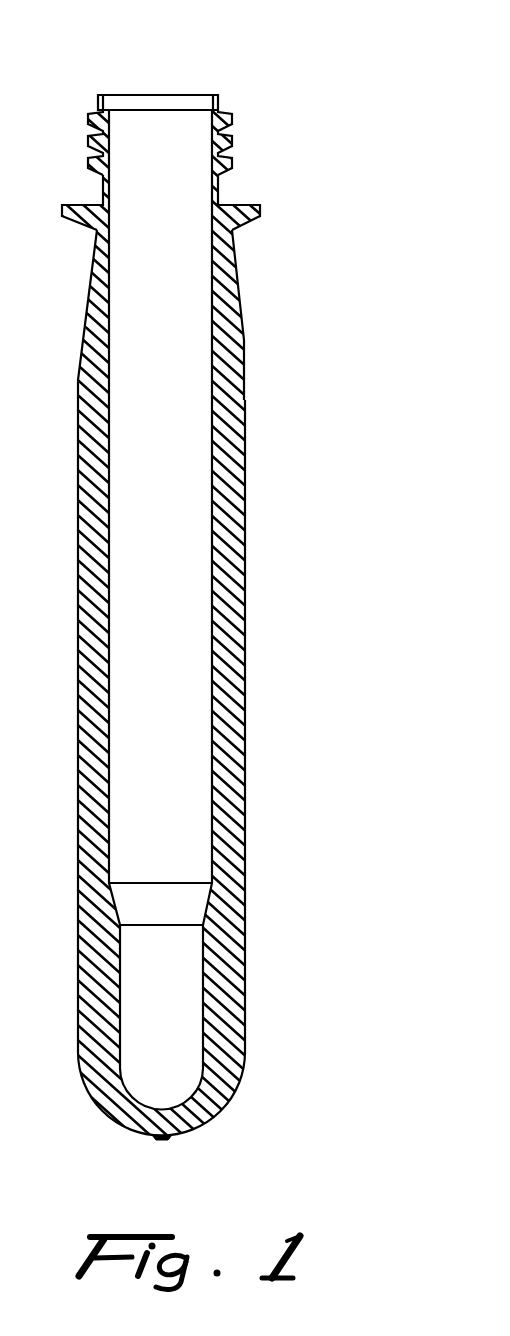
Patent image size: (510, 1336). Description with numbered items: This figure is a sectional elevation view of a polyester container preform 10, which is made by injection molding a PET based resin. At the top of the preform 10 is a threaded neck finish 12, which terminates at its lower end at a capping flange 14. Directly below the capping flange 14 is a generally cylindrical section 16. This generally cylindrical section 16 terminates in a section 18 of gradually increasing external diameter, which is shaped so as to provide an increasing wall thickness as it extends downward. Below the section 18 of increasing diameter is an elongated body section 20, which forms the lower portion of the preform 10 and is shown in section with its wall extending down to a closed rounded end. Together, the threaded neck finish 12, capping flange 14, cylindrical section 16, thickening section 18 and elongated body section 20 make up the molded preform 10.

The polyester container preform 10 is at (252, 541).
The threaded neck finish 12 is at (222, 108).
The capping flange 14 is at (241, 206).
The generally cylindrical section 16 is at (234, 273).
The section of gradually increasing external diameter 18 is at (243, 344).
The elongated body section 20 is at (247, 766).